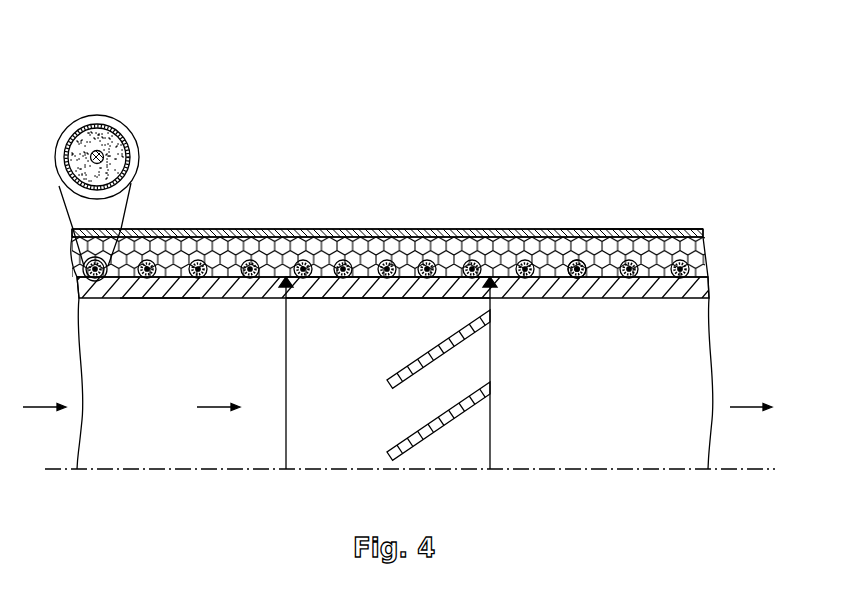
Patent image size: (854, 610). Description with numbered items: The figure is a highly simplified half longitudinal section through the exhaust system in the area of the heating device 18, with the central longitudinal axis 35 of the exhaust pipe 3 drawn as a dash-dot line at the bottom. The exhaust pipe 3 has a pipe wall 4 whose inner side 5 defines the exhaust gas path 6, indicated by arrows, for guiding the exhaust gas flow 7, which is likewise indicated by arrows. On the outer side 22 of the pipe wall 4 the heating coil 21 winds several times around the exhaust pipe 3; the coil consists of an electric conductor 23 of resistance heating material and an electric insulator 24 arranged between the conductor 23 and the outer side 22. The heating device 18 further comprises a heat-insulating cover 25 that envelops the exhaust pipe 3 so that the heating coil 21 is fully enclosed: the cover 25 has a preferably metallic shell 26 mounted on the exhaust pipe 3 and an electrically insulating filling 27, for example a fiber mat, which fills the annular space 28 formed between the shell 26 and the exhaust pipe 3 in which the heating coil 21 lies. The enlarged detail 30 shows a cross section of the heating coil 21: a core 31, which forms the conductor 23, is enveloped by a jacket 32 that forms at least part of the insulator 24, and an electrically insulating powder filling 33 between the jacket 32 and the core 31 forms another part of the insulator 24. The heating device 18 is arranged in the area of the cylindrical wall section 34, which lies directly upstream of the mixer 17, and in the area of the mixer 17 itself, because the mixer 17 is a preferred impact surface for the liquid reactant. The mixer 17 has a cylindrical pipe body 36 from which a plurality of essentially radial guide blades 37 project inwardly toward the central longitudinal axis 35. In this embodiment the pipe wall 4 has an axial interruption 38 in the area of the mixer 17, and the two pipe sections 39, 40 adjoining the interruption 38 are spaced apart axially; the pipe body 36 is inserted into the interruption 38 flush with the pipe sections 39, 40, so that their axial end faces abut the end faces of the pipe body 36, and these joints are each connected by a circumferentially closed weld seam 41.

The exhaust pipe 3 is at (716, 287).
The pipe wall 4 is at (660, 291).
The inner side 5 is at (616, 293).
The exhaust gas path 6 is at (213, 405).
The exhaust gas flow 7 is at (41, 405).
The mixer 17 is at (500, 405).
The heating device 18 is at (626, 164).
The heating coil 21 is at (122, 120).
The outer side 22 is at (601, 277).
The electric conductor 23 is at (577, 282).
The electric insulator 24 is at (576, 262).
The heat-insulating cover 25 is at (664, 226).
The shell 26 is at (537, 229).
The electrically insulating filling 27 is at (220, 229).
The annular space 28 is at (170, 247).
The enlarged detail 30 is at (70, 123).
The core 31 is at (116, 116).
The jacket 32 is at (130, 143).
The powder filling 33 is at (66, 146).
The wall section 34 is at (150, 326).
The central longitudinal axis 35 is at (163, 468).
The pipe body 36 is at (351, 292).
The guide blades 37 is at (388, 385).
The axial interruption 38 is at (372, 272).
The pipe section 39 is at (272, 292).
The pipe section 40 is at (502, 292).
The weld seam 41 is at (286, 275).